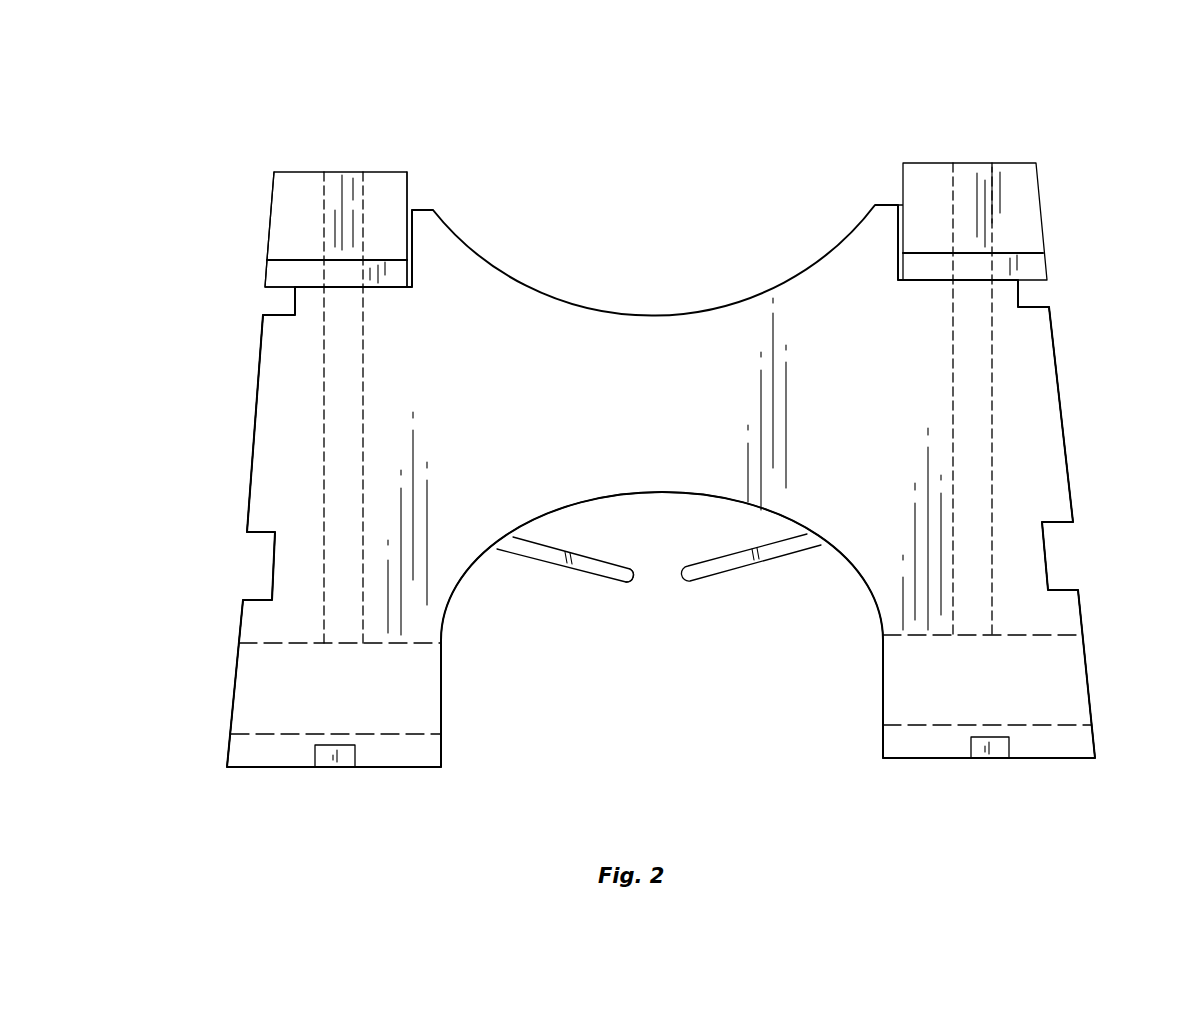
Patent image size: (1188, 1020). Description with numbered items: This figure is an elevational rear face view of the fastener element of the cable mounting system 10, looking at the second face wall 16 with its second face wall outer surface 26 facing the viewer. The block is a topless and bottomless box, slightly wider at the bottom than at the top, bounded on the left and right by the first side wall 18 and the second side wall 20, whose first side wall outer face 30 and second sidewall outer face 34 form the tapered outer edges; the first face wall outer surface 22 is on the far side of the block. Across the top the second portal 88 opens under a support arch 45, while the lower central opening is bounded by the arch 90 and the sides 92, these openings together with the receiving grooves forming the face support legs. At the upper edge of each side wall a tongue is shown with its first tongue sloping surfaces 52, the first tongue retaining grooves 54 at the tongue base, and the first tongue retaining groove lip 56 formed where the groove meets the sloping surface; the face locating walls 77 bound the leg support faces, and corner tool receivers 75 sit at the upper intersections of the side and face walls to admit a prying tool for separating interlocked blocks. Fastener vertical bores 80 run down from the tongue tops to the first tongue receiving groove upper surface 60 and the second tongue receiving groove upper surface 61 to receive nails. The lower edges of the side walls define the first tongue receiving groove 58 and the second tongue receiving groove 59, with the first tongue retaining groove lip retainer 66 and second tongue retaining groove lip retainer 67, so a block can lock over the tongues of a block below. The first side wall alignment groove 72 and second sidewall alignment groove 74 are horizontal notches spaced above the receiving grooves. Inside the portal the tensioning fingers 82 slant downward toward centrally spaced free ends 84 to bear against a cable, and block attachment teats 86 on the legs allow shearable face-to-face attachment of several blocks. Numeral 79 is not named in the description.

The cable mounting system 10 is at (825, 118).
The second face wall 16 is at (675, 391).
The first side wall 18 is at (252, 460).
The second side wall 20 is at (1057, 338).
The first face wall outer surface 22 is at (515, 310).
The second face wall outer surface 26 is at (832, 262).
The first side wall outer face 30 is at (257, 383).
The second sidewall outer face 34 is at (1065, 445).
The support arch 45 is at (645, 315).
The first tongue sloping surface 52 is at (283, 195).
The first tongue retaining groove 54 is at (273, 277).
The first tongue retaining groove lip 56 is at (267, 253).
The first tongue receiving groove 58 is at (237, 677).
The second tongue receiving groove 59 is at (1090, 687).
The first tongue receiving groove upper surface 60 is at (260, 643).
The second tongue receiving groove upper surface 61 is at (1057, 635).
The first tongue retaining groove lip retainer 66 is at (257, 735).
The second tongue retaining groove lip retainer 67 is at (1050, 725).
The first side wall alignment groove 72 is at (275, 560).
The second sidewall alignment groove 74 is at (1045, 557).
The corner tool receiver 75 is at (263, 310).
The face locating wall 77 is at (410, 225).
The second shoulder 79 is at (905, 227).
The fastener vertical bore 80 is at (328, 190).
The tensioning finger 82 is at (725, 567).
The free end 84 is at (630, 587).
The block attachment teat 86 is at (347, 760).
The second portal 88 is at (482, 558).
The arch 90 is at (622, 492).
The sides 92 is at (441, 693).